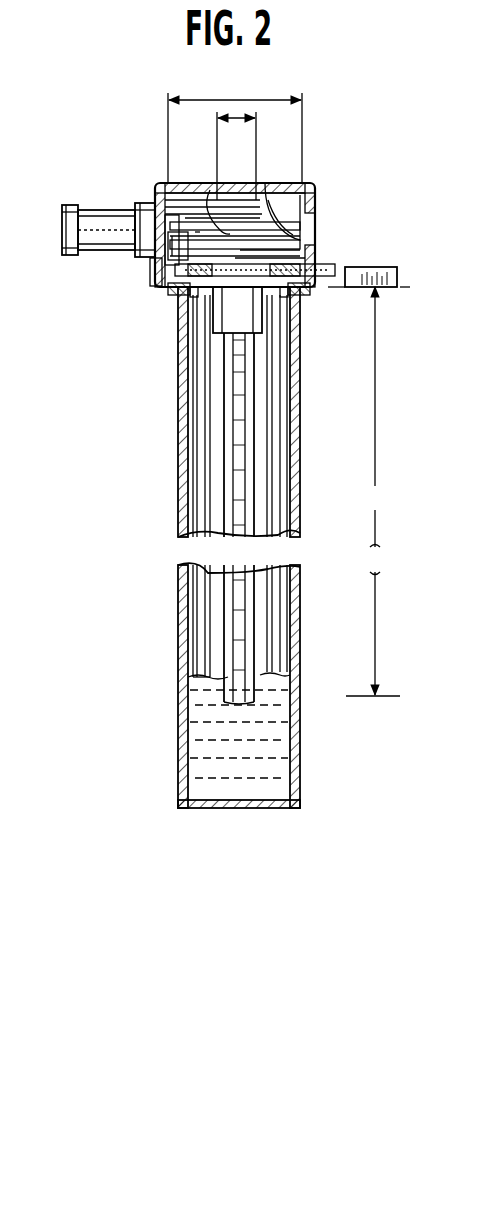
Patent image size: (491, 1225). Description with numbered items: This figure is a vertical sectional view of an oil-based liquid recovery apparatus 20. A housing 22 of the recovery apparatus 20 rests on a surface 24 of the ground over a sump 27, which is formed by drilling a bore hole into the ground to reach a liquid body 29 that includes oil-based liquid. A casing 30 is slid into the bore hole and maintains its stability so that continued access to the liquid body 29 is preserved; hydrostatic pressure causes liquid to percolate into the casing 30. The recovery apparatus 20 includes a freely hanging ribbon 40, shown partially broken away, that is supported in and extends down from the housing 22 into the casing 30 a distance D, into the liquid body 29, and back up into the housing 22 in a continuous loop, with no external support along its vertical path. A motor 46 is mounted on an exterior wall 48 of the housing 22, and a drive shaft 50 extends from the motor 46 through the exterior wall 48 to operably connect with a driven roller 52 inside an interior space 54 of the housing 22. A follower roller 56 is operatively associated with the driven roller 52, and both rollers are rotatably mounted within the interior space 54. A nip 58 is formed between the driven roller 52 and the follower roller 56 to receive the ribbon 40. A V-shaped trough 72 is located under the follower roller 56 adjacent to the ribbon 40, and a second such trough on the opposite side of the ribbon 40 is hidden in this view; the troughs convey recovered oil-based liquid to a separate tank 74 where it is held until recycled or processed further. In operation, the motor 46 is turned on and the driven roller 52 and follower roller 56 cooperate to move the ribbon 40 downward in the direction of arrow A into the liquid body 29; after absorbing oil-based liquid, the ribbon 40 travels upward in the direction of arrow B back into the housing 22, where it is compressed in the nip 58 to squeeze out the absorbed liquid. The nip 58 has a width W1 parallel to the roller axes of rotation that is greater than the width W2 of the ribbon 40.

The oil-based liquid recovery apparatus 20 is at (236, 196).
The housing 22 is at (304, 183).
The surface 24 is at (150, 283).
The sump 27 is at (175, 627).
The liquid body 29 is at (182, 718).
The casing 30 is at (179, 500).
The ribbon 40 is at (220, 408).
The motor 46 is at (60, 223).
The exterior wall 48 is at (150, 265).
The drive shaft 50 is at (162, 194).
The driven roller 52 is at (285, 208).
The interior space 54 is at (202, 193).
The follower roller 56 is at (320, 258).
The nip 58 is at (165, 183).
The V-shaped trough 72 is at (172, 286).
The separate tank 74 is at (385, 267).
The arrow A is at (296, 318).
The arrow B is at (175, 325).
The distance D is at (373, 491).
The width W1 is at (250, 100).
The width W2 is at (238, 119).